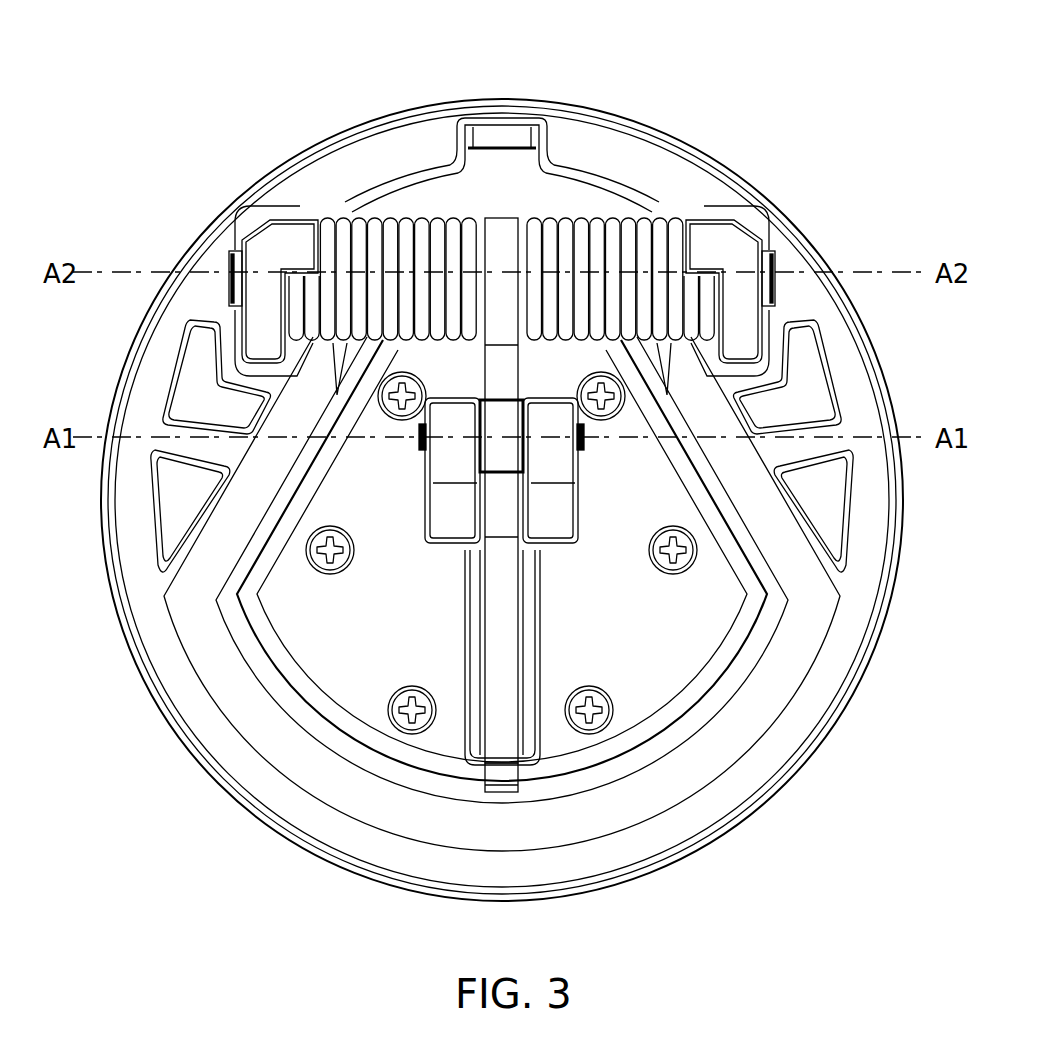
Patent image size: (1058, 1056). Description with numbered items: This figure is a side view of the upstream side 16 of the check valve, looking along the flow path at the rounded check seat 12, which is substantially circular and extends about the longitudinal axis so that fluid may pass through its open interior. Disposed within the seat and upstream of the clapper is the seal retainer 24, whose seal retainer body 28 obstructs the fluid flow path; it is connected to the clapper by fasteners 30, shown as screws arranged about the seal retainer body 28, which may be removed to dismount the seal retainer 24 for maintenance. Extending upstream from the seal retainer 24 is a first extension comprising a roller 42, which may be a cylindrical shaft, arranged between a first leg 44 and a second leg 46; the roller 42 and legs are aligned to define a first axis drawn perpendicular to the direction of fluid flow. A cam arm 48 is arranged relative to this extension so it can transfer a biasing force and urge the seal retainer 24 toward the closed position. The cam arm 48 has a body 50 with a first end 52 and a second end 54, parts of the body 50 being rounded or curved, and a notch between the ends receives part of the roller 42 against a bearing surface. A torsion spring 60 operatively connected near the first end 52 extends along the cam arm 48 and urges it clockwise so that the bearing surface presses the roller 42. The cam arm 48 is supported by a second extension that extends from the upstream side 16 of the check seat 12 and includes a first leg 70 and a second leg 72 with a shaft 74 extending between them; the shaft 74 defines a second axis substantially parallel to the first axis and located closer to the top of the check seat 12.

The check seat 12 is at (335, 175).
The upstream side 16 is at (595, 135).
The seal retainer 24 is at (713, 583).
The seal retainer body 28 is at (350, 667).
The fasteners 30 is at (695, 540).
The roller 42 is at (497, 453).
The first leg 44 is at (545, 522).
The second leg 46 is at (460, 522).
The cam arm 48 is at (515, 642).
The body 50 is at (485, 703).
The first end 52 is at (500, 290).
The second end 54 is at (507, 775).
The torsion spring 60 is at (418, 257).
The first leg 70 is at (733, 238).
The second leg 72 is at (260, 253).
The shaft 74 is at (773, 264).